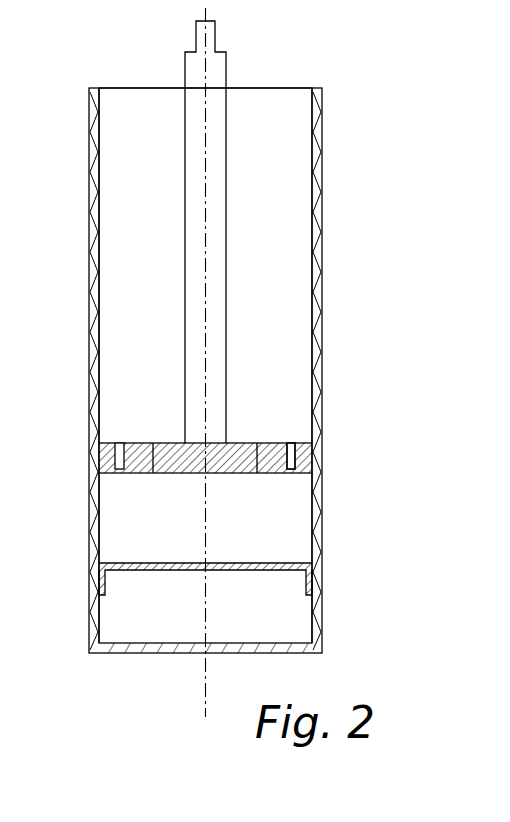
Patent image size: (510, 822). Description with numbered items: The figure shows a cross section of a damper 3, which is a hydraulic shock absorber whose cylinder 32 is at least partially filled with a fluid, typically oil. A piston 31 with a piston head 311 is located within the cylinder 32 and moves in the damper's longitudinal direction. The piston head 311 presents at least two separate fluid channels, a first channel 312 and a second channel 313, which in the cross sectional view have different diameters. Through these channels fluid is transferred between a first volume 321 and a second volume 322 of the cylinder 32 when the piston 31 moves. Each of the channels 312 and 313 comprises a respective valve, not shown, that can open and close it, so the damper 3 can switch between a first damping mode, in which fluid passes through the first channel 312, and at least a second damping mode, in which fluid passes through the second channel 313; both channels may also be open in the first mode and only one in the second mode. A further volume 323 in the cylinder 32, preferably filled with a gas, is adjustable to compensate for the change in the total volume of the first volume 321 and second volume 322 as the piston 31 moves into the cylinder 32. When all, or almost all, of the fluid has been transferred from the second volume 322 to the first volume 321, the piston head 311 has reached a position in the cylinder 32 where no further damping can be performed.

The damper 3 is at (262, 359).
The piston 31 is at (226, 112).
The piston head 311 is at (250, 419).
The first channel 312 is at (291, 474).
The second channel 313 is at (256, 474).
The cylinder 32 is at (322, 390).
The first volume 321 is at (285, 233).
The second volume 322 is at (122, 523).
The volume 323 is at (285, 620).